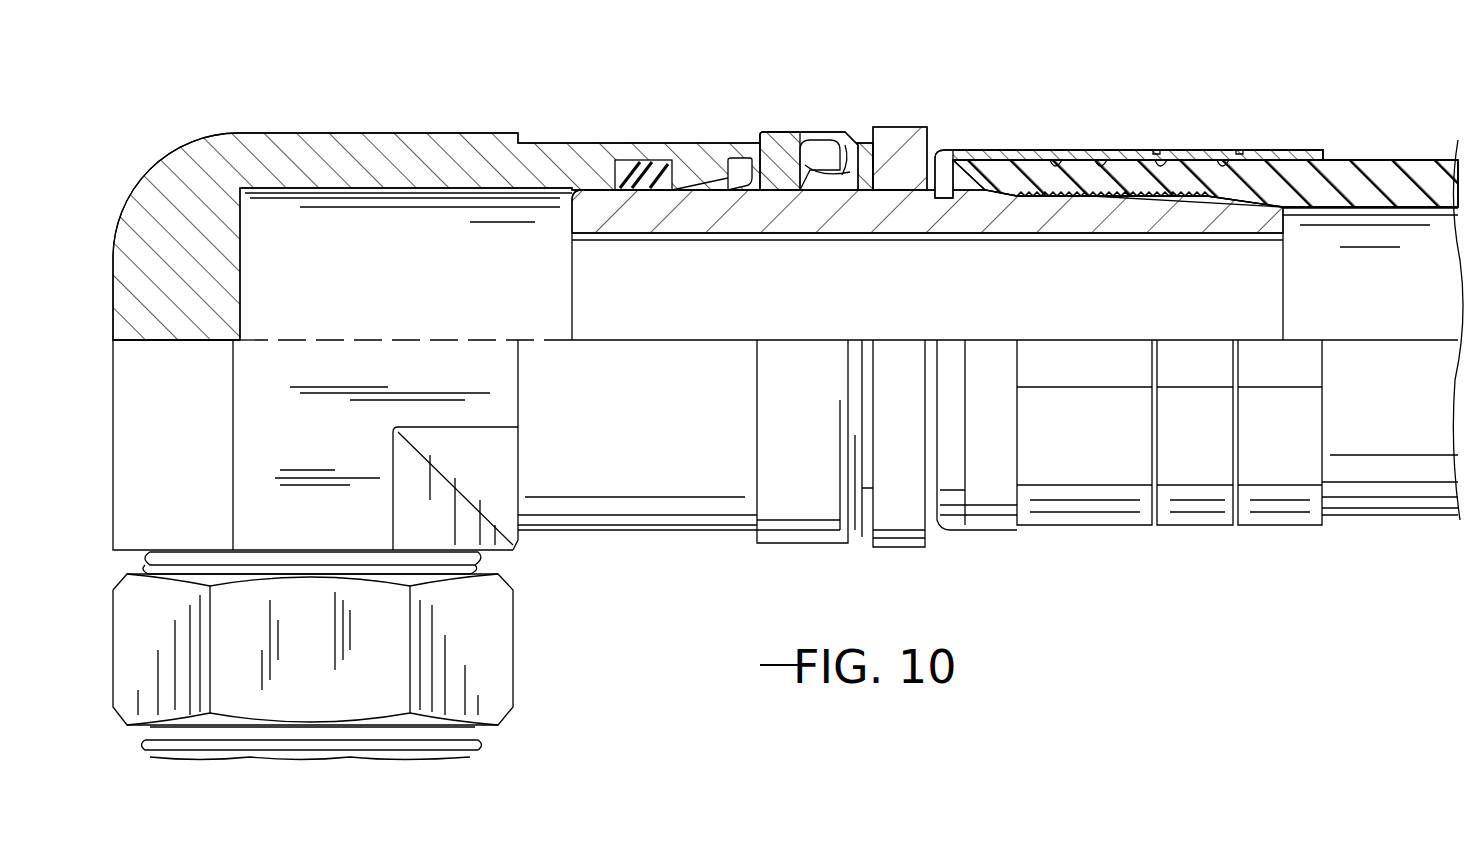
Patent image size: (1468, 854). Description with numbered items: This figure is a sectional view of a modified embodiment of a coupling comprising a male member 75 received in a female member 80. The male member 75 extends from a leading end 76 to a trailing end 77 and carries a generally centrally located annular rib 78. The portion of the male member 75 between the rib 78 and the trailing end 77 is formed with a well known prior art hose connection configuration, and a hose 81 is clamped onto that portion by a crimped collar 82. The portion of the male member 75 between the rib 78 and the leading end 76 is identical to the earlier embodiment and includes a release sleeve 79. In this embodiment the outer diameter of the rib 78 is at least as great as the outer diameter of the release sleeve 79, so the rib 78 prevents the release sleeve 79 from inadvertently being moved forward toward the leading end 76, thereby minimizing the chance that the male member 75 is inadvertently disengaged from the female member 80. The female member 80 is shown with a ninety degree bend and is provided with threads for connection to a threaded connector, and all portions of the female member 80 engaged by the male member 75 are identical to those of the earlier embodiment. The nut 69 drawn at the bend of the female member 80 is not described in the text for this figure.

The nut 69 is at (490, 558).
The male member 75 is at (1215, 133).
The leading end 76 is at (572, 192).
The trailing end 77 is at (1290, 266).
The annular rib 78 is at (900, 128).
The release sleeve 79 is at (794, 120).
The female member 80 is at (420, 122).
The hose 81 is at (1390, 175).
The crimped collar 82 is at (1100, 150).